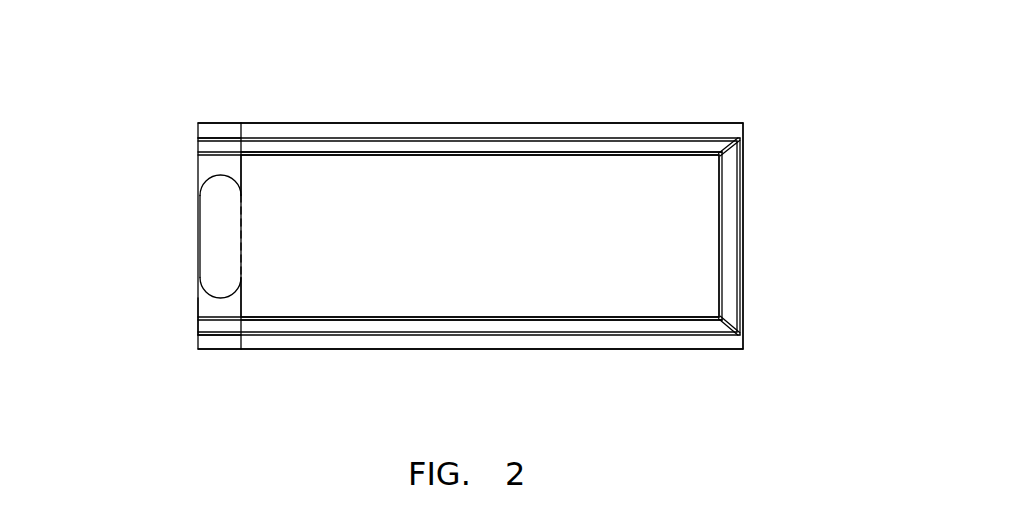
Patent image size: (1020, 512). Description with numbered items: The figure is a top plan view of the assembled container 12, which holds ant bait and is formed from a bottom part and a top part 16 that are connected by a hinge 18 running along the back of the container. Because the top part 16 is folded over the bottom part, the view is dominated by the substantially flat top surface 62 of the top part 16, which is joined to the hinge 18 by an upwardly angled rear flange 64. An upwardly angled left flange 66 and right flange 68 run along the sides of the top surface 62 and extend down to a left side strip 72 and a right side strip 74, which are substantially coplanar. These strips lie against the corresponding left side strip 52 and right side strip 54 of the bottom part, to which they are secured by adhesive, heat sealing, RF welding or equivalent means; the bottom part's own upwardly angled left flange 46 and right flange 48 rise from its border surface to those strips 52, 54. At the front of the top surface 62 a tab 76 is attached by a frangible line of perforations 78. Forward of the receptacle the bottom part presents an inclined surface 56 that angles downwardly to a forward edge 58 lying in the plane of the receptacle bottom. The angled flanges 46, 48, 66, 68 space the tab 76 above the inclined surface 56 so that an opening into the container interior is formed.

The container 12 is at (685, 73).
The top part 16 is at (425, 191).
The hinge 18 is at (742, 175).
The left flange 46 is at (208, 146).
The right flange 48 is at (215, 325).
The left side strip 52 is at (221, 128).
The right side strip 54 is at (225, 344).
The inclined surface 56 is at (208, 302).
The forward edge 58 is at (198, 313).
The top surface 62 is at (293, 177).
The rear flange 64 is at (729, 283).
The left flange 66 is at (457, 147).
The right flange 68 is at (573, 325).
The left side strip 72 is at (540, 130).
The right side strip 74 is at (658, 343).
The tab 76 is at (215, 220).
The line of perforations 78 is at (243, 258).